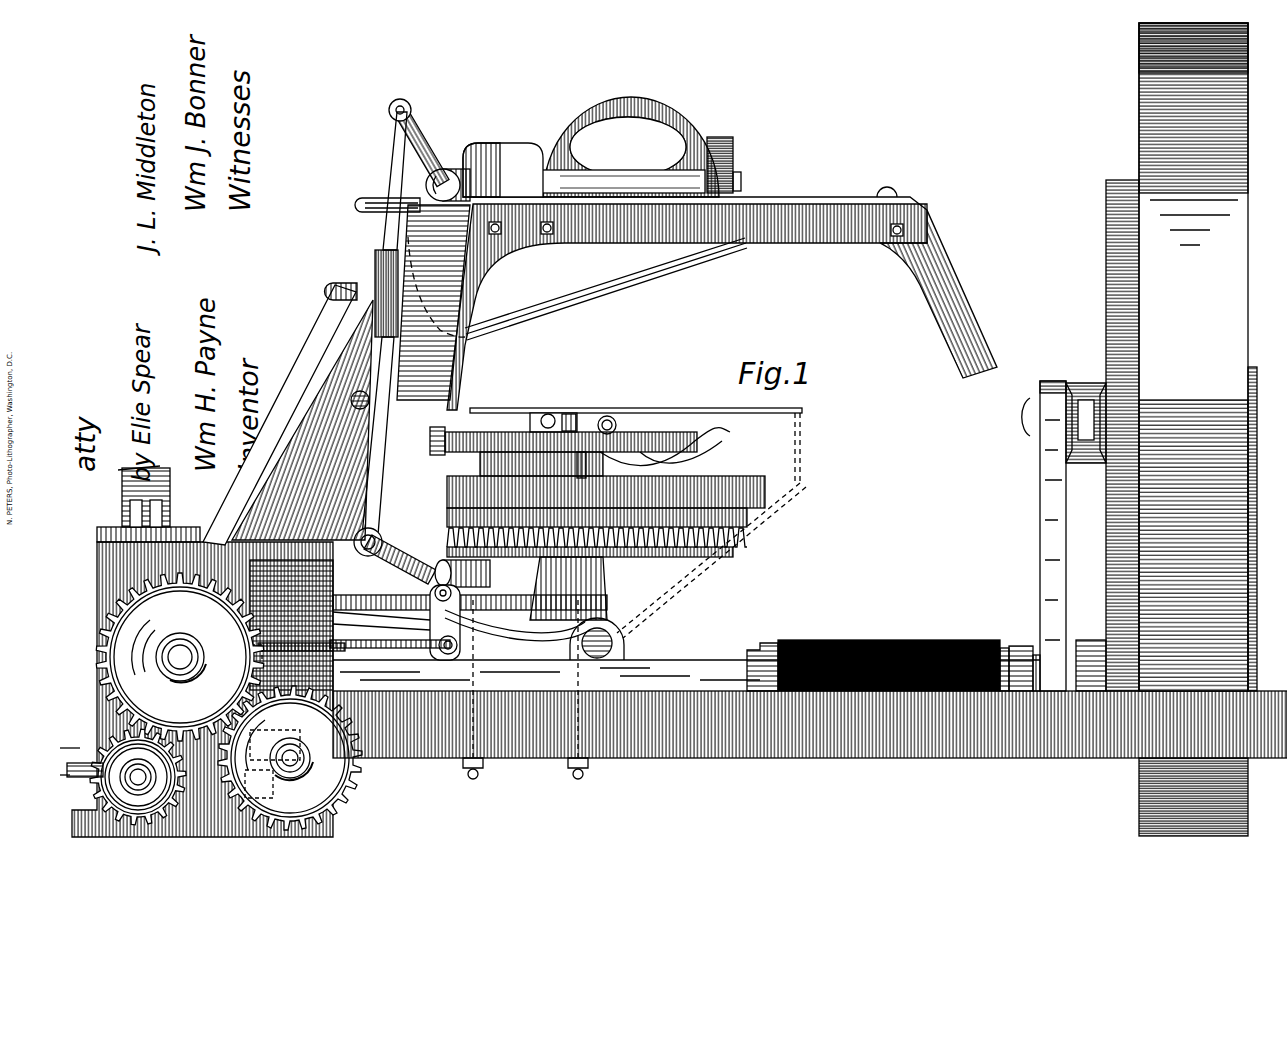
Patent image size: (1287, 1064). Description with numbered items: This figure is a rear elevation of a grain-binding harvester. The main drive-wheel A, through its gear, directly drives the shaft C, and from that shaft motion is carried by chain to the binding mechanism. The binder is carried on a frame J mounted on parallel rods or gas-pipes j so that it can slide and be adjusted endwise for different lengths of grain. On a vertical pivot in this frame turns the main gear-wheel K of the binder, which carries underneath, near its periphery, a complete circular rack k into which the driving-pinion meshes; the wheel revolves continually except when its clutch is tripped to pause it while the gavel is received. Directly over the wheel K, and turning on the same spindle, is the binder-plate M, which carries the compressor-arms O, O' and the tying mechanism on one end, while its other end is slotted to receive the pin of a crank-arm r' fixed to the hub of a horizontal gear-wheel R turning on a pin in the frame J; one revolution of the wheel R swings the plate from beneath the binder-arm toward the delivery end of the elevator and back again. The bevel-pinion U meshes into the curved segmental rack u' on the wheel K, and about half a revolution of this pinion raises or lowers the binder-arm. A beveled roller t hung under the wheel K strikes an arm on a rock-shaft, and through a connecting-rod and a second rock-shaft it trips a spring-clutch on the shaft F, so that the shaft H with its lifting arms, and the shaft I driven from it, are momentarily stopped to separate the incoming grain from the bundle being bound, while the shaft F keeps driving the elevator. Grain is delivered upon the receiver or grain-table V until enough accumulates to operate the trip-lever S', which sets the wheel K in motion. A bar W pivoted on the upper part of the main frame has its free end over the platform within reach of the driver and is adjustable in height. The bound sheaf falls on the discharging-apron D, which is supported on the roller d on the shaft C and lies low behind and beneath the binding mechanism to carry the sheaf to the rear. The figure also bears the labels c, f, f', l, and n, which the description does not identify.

The main drive-wheel A is at (1181, 429).
The shaft C is at (810, 689).
The bearing block / set screw c is at (1080, 645).
The discharging-apron D is at (893, 653).
The roller d is at (765, 646).
The shaft F is at (290, 758).
The pivot journal f is at (607, 639).
The clutch box f' is at (283, 662).
The shaft H is at (179, 657).
The shaft I is at (138, 777).
The frame J is at (618, 600).
The parallel rods j is at (500, 632).
The main gear-wheel K is at (767, 494).
The circular rack k is at (740, 540).
The shaft end l is at (81, 757).
The binder-plate M is at (645, 440).
The pawl n is at (272, 764).
The compressor-arm O is at (563, 450).
The compressor-arm O' is at (665, 449).
The horizontal gear-wheel R is at (541, 477).
The crank-arm r' is at (594, 465).
The trip-lever S' is at (697, 298).
The beveled roller t is at (445, 622).
The bevel-pinion U is at (568, 588).
The curved segmental rack u' is at (638, 147).
The platform V is at (638, 509).
The bar W is at (608, 288).